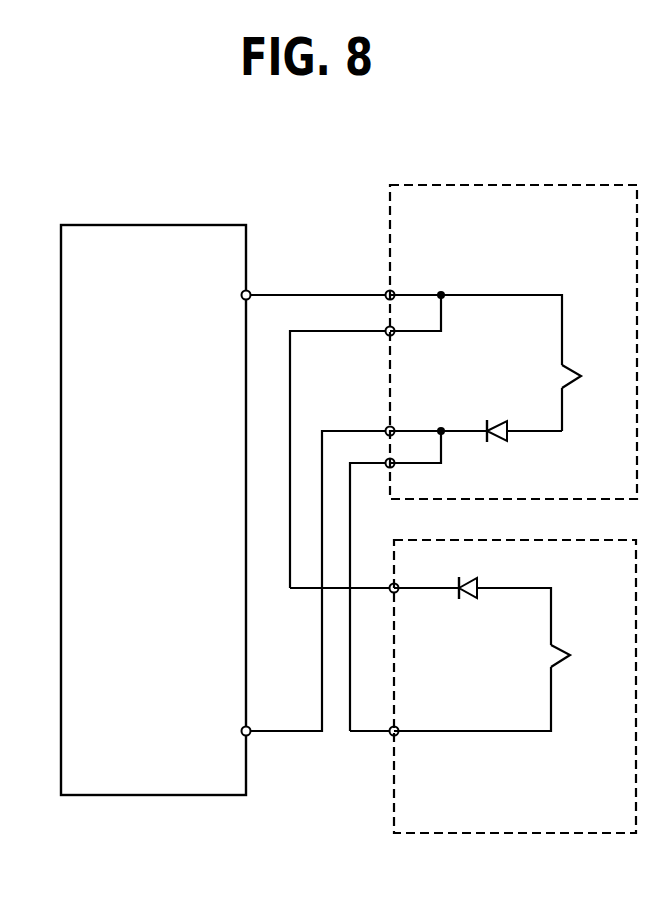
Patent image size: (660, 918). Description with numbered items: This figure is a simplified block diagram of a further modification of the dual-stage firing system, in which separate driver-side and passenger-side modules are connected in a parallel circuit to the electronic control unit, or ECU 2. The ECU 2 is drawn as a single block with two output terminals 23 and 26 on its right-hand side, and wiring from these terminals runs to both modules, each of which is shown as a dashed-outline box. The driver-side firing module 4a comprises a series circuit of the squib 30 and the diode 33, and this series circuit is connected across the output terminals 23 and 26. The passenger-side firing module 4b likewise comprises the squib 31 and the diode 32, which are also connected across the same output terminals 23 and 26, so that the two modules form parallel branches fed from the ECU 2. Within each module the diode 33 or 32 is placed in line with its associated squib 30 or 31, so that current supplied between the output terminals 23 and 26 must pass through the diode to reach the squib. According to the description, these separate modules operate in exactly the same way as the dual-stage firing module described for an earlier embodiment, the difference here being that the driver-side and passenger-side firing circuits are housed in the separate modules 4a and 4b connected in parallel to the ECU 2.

The ECU 2 is at (147, 225).
The output terminal 23 is at (251, 294).
The output terminal 26 is at (251, 729).
The driver-side firing module 4a is at (528, 186).
The passenger-side firing module 4b is at (527, 834).
The squib 30 is at (580, 377).
The squib 31 is at (566, 654).
The diode 32 is at (476, 597).
The diode 33 is at (491, 421).